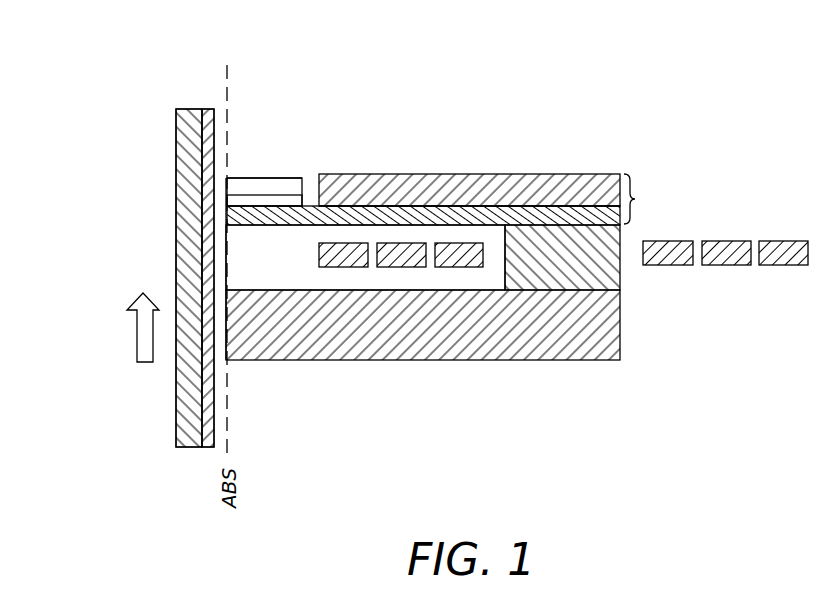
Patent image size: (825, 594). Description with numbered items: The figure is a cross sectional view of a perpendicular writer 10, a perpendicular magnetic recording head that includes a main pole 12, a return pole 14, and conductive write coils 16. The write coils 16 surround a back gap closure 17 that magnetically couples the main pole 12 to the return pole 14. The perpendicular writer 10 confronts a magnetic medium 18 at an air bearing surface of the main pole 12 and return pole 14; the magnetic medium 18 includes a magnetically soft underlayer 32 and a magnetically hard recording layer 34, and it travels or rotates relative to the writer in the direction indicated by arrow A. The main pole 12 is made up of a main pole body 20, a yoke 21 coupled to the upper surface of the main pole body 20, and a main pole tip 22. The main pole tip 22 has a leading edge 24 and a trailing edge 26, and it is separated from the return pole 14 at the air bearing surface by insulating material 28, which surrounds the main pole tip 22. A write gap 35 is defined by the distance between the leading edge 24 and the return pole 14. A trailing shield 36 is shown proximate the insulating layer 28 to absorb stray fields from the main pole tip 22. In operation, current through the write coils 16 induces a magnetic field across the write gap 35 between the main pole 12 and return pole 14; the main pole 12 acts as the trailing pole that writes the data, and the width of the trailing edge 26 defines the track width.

The perpendicular writer 10 is at (517, 237).
The main pole 12 is at (445, 205).
The return pole 14 is at (312, 330).
The write coils 16 is at (712, 241).
The back gap closure 17 is at (605, 262).
The magnetic medium 18 is at (163, 267).
The main pole body 20 is at (335, 206).
The yoke 21 is at (408, 190).
The main pole tip 22 is at (276, 216).
The leading edge 24 is at (236, 239).
The trailing edge 26 is at (234, 163).
The insulating material 28 is at (273, 200).
The magnetically soft underlayer 32 is at (186, 182).
The magnetically hard recording layer 34 is at (205, 272).
The write gap 35 is at (226, 243).
The trailing shield 36 is at (257, 185).
The arrow A is at (142, 342).